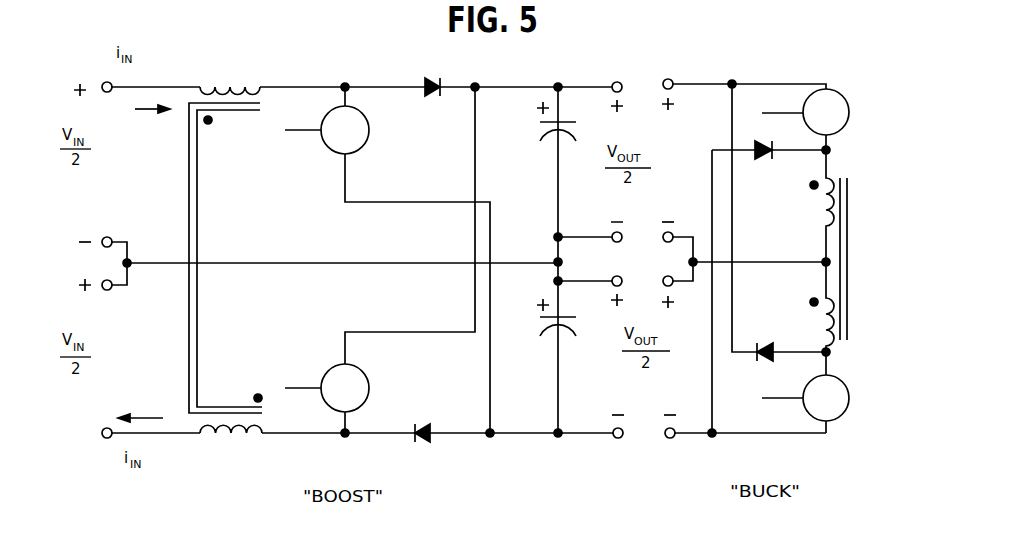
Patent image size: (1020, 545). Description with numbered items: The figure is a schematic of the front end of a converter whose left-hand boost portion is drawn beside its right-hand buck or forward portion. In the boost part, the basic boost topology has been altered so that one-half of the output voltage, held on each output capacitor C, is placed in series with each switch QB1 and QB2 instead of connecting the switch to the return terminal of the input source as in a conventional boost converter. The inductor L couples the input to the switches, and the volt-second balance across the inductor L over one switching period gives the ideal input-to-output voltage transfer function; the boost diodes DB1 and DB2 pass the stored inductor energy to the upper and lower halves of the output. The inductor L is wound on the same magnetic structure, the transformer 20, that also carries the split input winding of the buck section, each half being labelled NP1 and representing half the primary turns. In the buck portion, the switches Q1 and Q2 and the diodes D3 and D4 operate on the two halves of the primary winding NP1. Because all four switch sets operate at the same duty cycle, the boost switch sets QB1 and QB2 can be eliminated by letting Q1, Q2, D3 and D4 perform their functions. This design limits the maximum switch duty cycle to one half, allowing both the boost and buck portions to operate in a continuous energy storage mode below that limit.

The transformer 20 is at (198, 229).
The inductor L is at (231, 260).
The output capacitor C is at (555, 229).
The boost switch QB1 is at (321, 132).
The boost switch QB2 is at (321, 388).
The boost diode DB1 is at (431, 73).
The boost diode DB2 is at (427, 447).
The buck switch Q1 is at (799, 114).
The buck switch Q2 is at (798, 397).
The diode D3 is at (765, 166).
The diode D4 is at (780, 345).
The primary winding NP1 is at (788, 222).